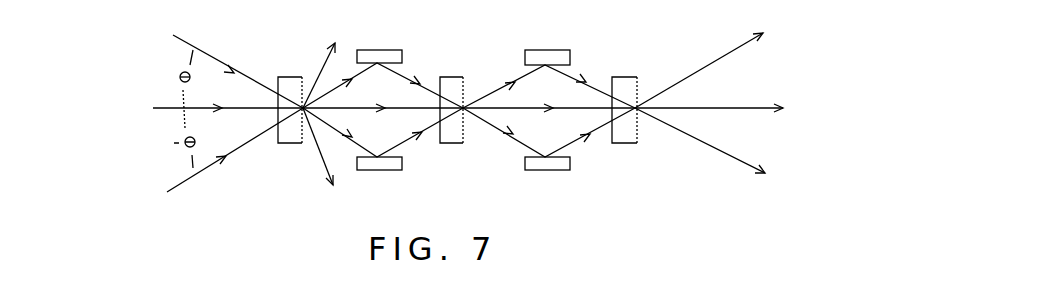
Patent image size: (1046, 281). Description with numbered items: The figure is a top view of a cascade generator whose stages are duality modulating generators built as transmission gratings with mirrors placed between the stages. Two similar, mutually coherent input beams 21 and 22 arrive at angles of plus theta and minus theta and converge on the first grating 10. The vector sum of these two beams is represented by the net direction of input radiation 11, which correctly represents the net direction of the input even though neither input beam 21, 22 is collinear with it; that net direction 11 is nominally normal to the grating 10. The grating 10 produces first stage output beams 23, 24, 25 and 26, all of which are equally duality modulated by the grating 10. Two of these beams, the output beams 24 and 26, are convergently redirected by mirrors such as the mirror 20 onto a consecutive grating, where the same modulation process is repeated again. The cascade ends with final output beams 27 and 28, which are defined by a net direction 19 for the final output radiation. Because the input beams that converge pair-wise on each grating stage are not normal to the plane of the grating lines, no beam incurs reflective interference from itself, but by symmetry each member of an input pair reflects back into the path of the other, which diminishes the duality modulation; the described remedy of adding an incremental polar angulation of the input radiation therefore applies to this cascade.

The grating 10 is at (289, 148).
The net direction of input radiation 11 is at (162, 113).
The net direction for final output radiation 19 is at (737, 103).
The mirror 20 is at (406, 163).
The input beam 21 is at (190, 34).
The input beam 22 is at (188, 188).
The first stage output beam 23 is at (320, 60).
The first stage output beam 24 is at (342, 96).
The first stage output beam 25 is at (337, 167).
The first stage output beam 26 is at (365, 128).
The final output beam 27 is at (732, 47).
The final output beam 28 is at (726, 164).